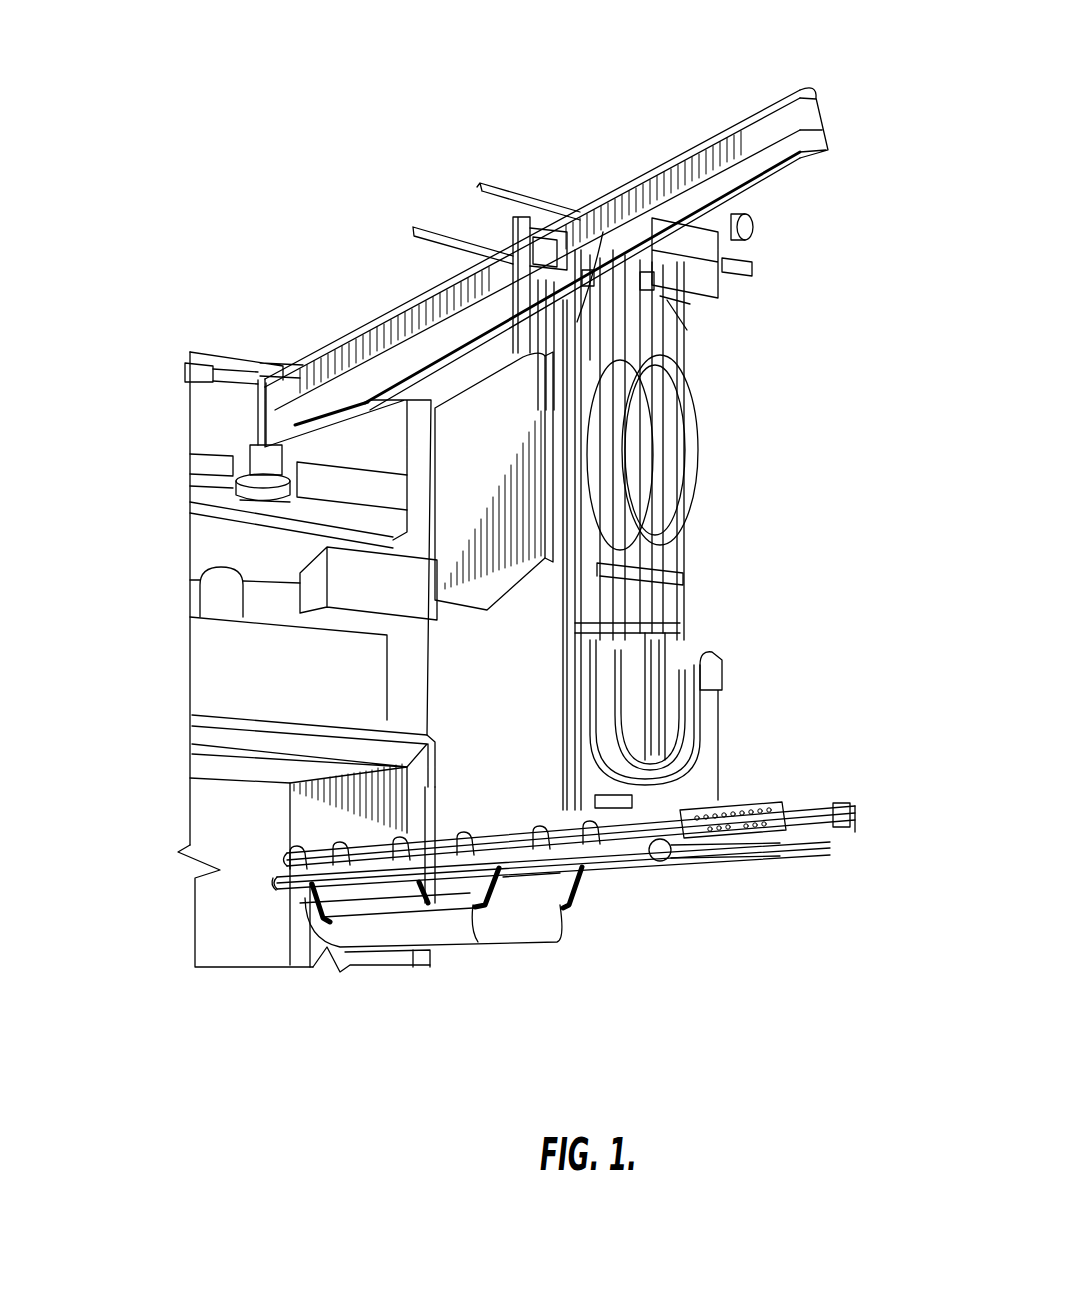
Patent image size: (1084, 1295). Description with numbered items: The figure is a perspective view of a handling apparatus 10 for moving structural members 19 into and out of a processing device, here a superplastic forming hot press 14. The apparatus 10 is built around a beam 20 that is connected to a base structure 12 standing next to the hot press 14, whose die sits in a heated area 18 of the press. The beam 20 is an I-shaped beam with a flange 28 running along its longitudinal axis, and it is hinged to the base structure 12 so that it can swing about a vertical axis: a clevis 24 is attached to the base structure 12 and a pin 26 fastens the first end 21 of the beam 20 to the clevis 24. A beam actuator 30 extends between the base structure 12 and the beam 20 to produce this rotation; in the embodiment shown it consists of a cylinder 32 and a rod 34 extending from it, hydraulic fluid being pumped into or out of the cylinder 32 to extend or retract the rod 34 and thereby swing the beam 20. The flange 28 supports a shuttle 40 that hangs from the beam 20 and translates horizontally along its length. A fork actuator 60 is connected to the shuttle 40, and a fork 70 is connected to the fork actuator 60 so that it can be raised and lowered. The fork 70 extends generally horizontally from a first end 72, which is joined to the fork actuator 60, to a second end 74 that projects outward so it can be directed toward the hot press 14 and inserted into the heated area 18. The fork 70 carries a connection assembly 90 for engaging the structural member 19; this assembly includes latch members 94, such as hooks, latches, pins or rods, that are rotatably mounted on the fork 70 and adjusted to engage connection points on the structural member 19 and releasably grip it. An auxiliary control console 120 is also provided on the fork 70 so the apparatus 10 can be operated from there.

The handling apparatus 10 is at (312, 247).
The base structure 12 is at (413, 963).
The superplastic forming hot press 14 is at (190, 732).
The heated area 18 is at (253, 937).
The structural member 19 is at (557, 940).
The beam 20 is at (742, 112).
The first end of the beam 21 is at (297, 362).
The clevis 24 is at (267, 465).
The pin 26 is at (265, 495).
The flange 28 is at (785, 160).
The beam actuator 30 is at (195, 352).
The cylinder 32 is at (187, 370).
The rod 34 is at (247, 365).
The shuttle 40 is at (630, 230).
The fork actuator 60 is at (663, 605).
The fork 70 is at (830, 858).
The first end of the fork 72 is at (780, 860).
The second end of the fork 74 is at (277, 882).
The connection assembly 90 is at (514, 835).
The latch members 94 is at (463, 890).
The auxiliary control console 120 is at (773, 812).